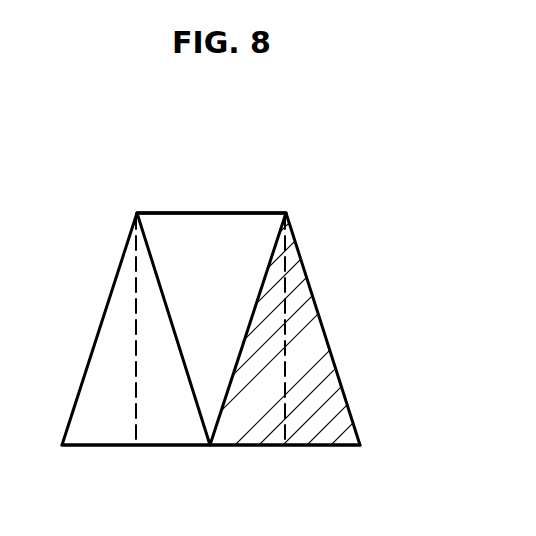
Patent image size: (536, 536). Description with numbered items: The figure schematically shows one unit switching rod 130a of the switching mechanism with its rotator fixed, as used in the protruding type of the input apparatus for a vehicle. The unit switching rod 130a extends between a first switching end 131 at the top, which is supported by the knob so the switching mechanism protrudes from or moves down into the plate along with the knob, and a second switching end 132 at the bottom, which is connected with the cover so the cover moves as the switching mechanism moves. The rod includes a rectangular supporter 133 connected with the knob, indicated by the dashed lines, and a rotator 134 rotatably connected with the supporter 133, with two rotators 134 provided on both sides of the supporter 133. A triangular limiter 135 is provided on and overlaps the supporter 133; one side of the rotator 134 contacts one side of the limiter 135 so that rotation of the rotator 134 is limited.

The unit switching rod 130a is at (149, 151).
The first switching end 131 is at (208, 213).
The second switching end 132 is at (247, 446).
The supporter 133 is at (287, 322).
The rotator 134 is at (320, 395).
The limiter 135 is at (243, 270).